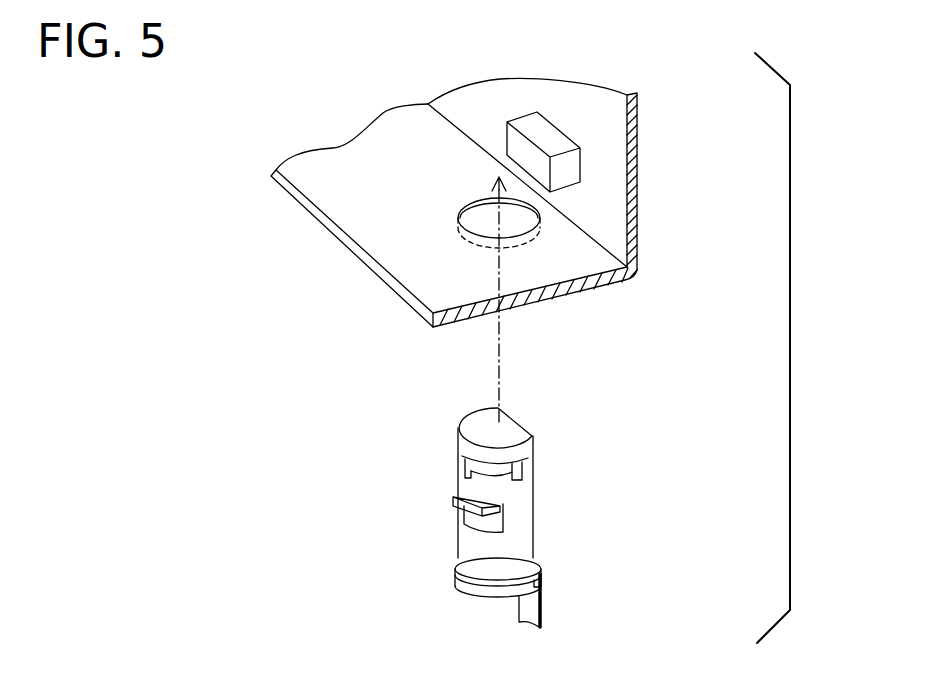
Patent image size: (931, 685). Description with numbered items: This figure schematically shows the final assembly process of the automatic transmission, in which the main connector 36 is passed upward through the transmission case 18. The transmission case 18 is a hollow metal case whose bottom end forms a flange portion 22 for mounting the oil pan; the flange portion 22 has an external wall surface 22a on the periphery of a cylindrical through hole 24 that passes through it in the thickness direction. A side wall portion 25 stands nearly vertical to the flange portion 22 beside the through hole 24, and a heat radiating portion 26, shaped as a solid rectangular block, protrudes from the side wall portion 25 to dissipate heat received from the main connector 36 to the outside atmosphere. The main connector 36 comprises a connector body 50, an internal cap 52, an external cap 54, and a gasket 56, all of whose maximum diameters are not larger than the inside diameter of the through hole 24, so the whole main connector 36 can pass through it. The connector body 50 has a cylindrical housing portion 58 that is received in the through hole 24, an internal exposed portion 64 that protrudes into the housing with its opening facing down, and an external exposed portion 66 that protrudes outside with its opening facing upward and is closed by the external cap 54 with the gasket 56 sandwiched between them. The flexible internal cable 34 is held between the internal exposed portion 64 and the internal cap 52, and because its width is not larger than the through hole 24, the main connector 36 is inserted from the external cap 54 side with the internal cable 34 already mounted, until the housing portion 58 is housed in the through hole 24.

The transmission case 18 is at (402, 108).
The flange portion 22 is at (355, 253).
The external wall surface of the flange portion 22a is at (385, 183).
The through hole 24 is at (515, 226).
The side wall portion 25 is at (636, 157).
The heat radiating portion 26 is at (528, 123).
The internal cable 34 is at (543, 613).
The main connector 36 is at (528, 412).
The connector body 50 is at (360, 468).
The internal cap 52 is at (545, 592).
The external cap 54 is at (532, 452).
The gasket 56 is at (532, 456).
The housing portion 58 is at (458, 556).
The internal exposed portion 64 is at (458, 578).
The external exposed portion 66 is at (458, 487).